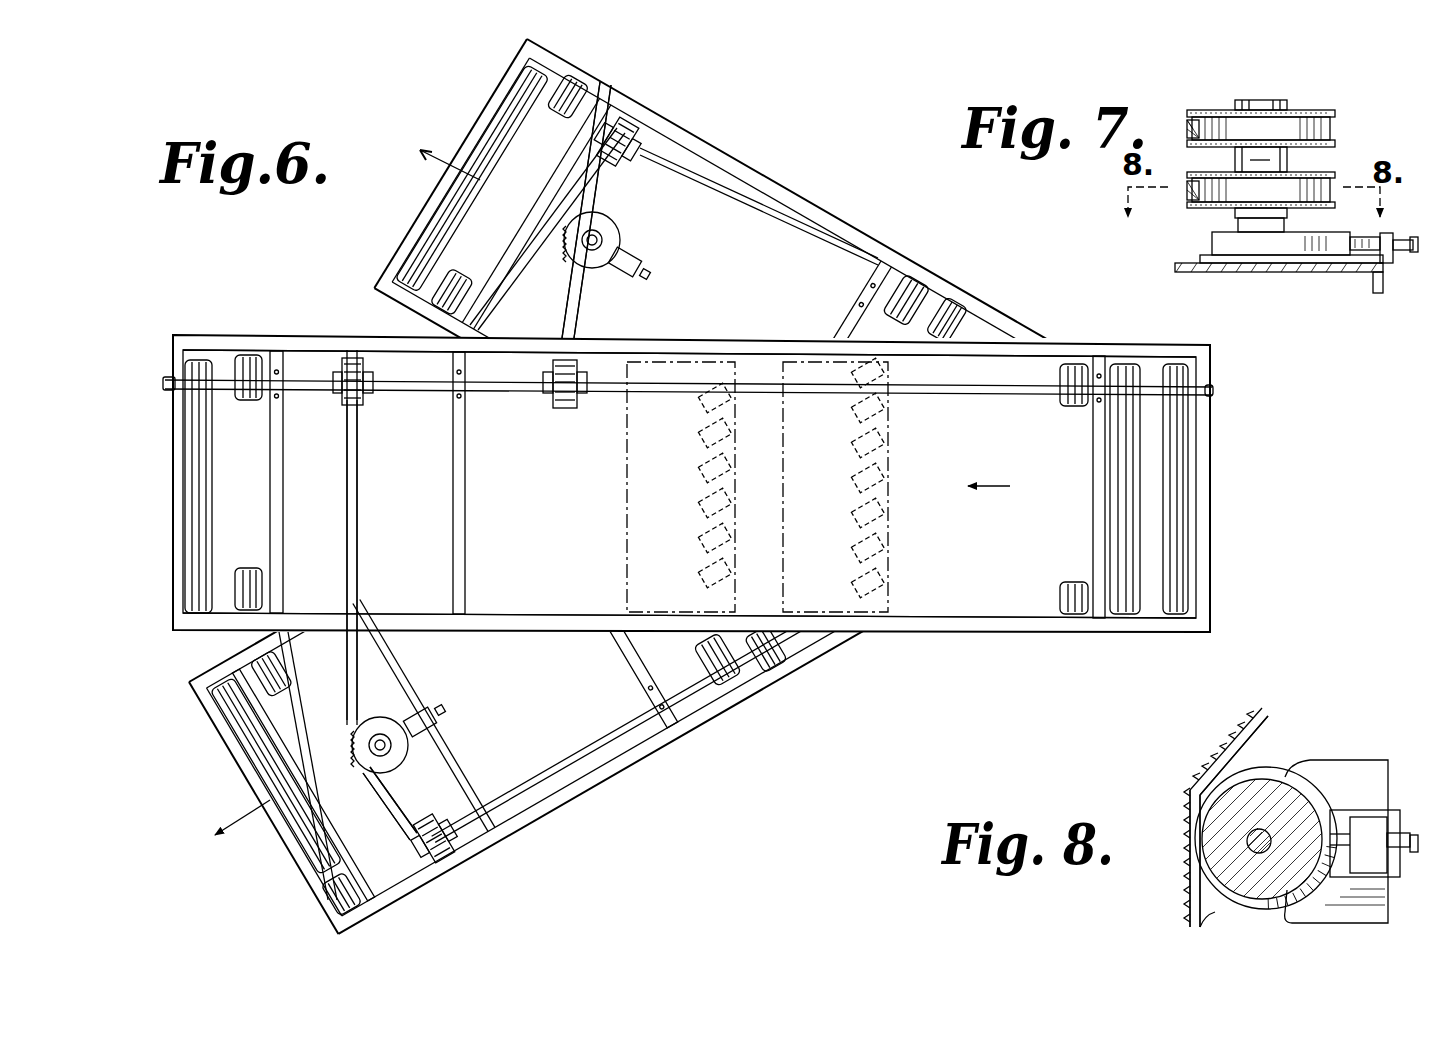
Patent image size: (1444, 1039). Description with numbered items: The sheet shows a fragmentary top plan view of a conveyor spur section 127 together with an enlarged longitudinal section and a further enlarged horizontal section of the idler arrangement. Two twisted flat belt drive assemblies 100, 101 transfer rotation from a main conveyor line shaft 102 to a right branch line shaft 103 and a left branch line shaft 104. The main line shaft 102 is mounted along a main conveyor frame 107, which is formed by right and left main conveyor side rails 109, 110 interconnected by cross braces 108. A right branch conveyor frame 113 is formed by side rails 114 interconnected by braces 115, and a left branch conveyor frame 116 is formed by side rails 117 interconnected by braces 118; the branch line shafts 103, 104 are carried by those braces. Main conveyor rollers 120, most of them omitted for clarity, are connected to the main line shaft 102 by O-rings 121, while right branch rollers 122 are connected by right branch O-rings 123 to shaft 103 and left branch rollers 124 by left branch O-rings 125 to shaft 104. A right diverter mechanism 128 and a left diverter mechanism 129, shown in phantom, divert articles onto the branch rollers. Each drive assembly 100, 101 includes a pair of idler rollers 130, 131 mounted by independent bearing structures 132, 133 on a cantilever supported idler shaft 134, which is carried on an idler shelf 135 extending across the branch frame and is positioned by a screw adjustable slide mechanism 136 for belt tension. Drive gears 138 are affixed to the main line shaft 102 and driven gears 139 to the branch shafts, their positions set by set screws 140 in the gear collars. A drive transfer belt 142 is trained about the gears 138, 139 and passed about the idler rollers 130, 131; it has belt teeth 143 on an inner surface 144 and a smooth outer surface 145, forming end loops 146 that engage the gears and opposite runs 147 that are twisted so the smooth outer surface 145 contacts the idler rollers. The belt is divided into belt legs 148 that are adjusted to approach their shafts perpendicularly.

In FIG. 6, the twisted belt drive assembly 100 is at (713, 304).
In FIG. 6, the twisted belt drive assembly 101 is at (529, 648).
In FIG. 6, the main conveyor line shaft 102 is at (978, 392).
In FIG. 6, the right branch line shaft 103 is at (759, 217).
In FIG. 6, the left branch line shaft 104 is at (654, 711).
In FIG. 6, the main conveyor frame 107 is at (1100, 634).
In FIG. 6, the cross braces 108 is at (270, 516).
In FIG. 6, the right main conveyor side rail 109 is at (312, 348).
In FIG. 6, the left main conveyor side rail 110 is at (932, 630).
In FIG. 6, the right branch conveyor frame 113 is at (812, 186).
In FIG. 6, the side rails 114 is at (537, 213).
In FIG. 6, the braces 115 is at (580, 145).
In FIG. 6, the left branch conveyor frame 116 is at (611, 768).
In FIG. 6, the side rails 117 is at (541, 648).
In FIG. 6, the braces 118 is at (455, 697).
In FIG. 6, the main conveyor rollers 120 is at (240, 395).
In FIG. 6, the O-rings 121 is at (245, 360).
In FIG. 6, the right branch rollers 122 is at (681, 294).
In FIG. 6, the right branch O-rings 123 is at (679, 293).
In FIG. 6, the left branch rollers 124 is at (475, 681).
In FIG. 6, the left branch O-rings 125 is at (496, 674).
In FIG. 6, the conveyor spur section 127 is at (298, 292).
In FIG. 6, the right diverter mechanism 128 is at (888, 528).
In FIG. 6, the left diverter mechanism 129 is at (627, 528).
In FIG. 6, the idler roller 130 is at (620, 240).
In FIG. 7, the idler roller 130 is at (1335, 113).
In FIG. 7, the idler roller 131 is at (1230, 216).
In FIG. 8, the idler roller 131 is at (1260, 767).
In FIG. 7, the bearing structure 132 is at (1285, 104).
In FIG. 7, the bearing structure 133 is at (1235, 226).
In FIG. 6, the idler shaft 134 is at (596, 237).
In FIG. 7, the idler shaft 134 is at (1282, 158).
In FIG. 8, the idler shaft 134 is at (1268, 832).
In FIG. 6, the idler shelf 135 is at (515, 290).
In FIG. 7, the idler shelf 135 is at (1384, 285).
In FIG. 8, the idler shelf 135 is at (1367, 762).
In FIG. 6, the screw adjustable slide mechanism 136 is at (640, 268).
In FIG. 7, the screw adjustable slide mechanism 136 is at (1300, 258).
In FIG. 8, the screw adjustable slide mechanism 136 is at (1392, 810).
In FIG. 6, the drive toothed pulleys or gears 138 is at (365, 402).
In FIG. 6, the driven gears 139 is at (640, 142).
In FIG. 6, the set screws 140 is at (340, 392).
In FIG. 6, the drive transfer belt 142 is at (358, 462).
In FIG. 7, the drive transfer belt 142 is at (1186, 186).
In FIG. 8, the drive transfer belt 142 is at (1272, 702).
In FIG. 7, the belt teeth 143 is at (1186, 122).
In FIG. 8, the belt teeth 143 is at (1188, 788).
In FIG. 8, the inner surface 144 is at (1218, 768).
In FIG. 8, the smooth outer surface 145 is at (1274, 726).
In FIG. 6, the end loops 146 is at (366, 372).
In FIG. 6, the runs 147 is at (358, 566).
In FIG. 8, the runs 147 is at (1214, 915).
In FIG. 6, the belt legs 148 is at (347, 546).